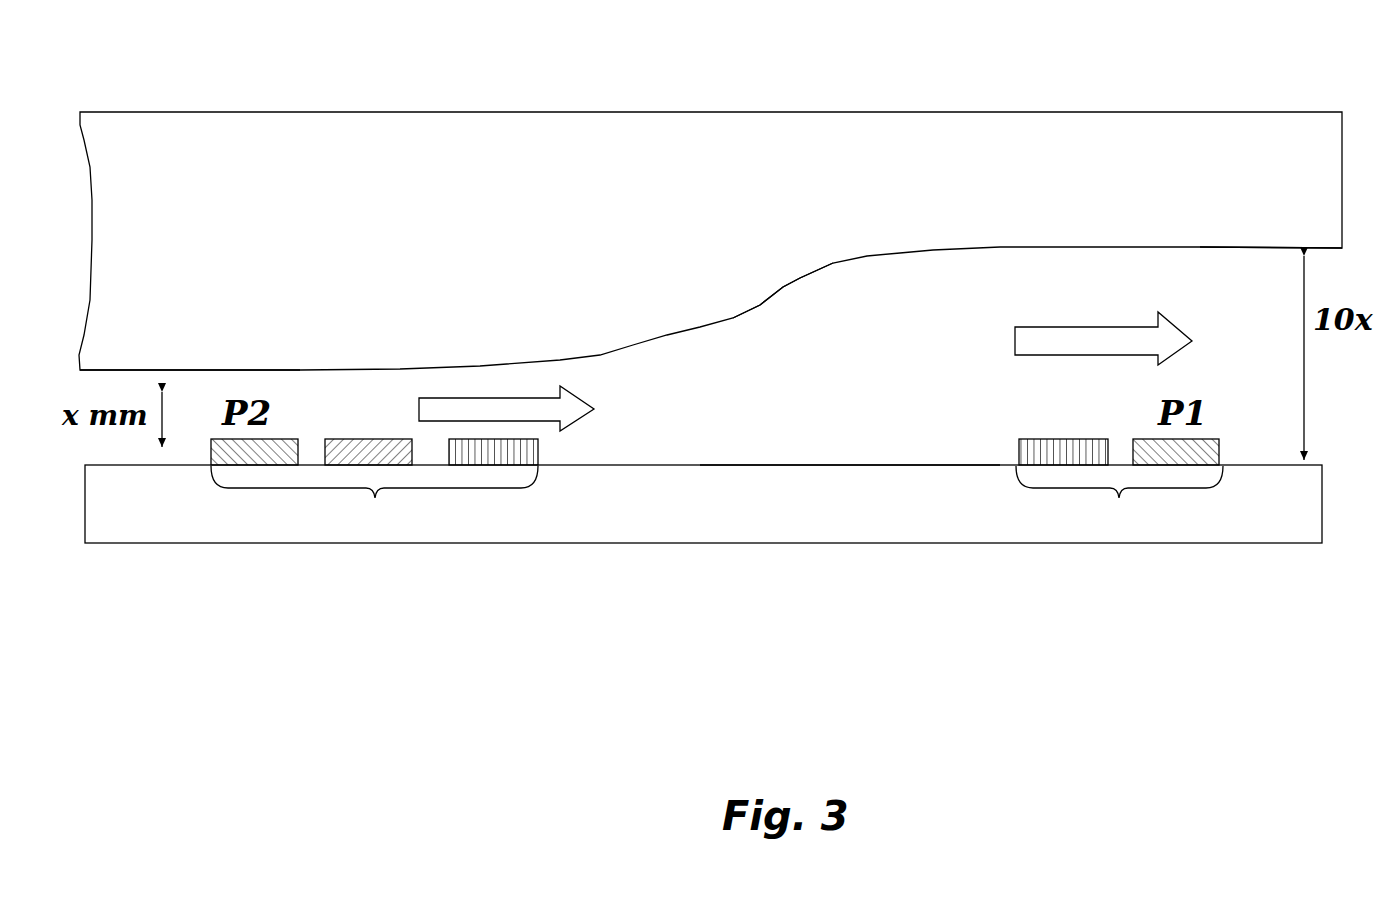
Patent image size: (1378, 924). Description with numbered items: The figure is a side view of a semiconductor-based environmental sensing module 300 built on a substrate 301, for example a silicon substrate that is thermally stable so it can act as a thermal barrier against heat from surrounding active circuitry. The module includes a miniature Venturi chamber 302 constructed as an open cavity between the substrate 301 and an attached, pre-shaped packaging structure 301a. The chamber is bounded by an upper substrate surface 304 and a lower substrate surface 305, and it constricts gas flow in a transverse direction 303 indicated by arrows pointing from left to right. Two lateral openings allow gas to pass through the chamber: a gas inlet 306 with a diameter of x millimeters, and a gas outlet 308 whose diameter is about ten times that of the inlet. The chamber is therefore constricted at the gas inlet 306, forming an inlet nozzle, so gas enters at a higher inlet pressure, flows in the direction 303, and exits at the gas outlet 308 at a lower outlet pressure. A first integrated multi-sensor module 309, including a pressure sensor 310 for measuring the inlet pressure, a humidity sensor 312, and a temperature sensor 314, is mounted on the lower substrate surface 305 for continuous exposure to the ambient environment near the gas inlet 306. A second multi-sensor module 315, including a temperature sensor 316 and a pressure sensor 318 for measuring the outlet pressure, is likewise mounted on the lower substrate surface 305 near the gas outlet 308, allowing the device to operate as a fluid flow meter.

The environmental sensing module 300 is at (1108, 30).
The substrate 301 is at (703, 504).
The packaging structure 301a is at (1271, 232).
The miniature Venturi chamber 302 is at (710, 241).
The transverse direction 303 is at (568, 406).
The upper substrate surface 304 is at (885, 255).
The lower substrate surface 305 is at (843, 463).
The gas inlet 306 is at (182, 408).
The gas outlet 308 is at (1329, 358).
The first integrated multi-sensor module 309 is at (374, 500).
The pressure sensor 310 is at (286, 437).
The humidity sensor 312 is at (352, 437).
The temperature sensor 314 is at (540, 451).
The second multi-sensor module 315 is at (1119, 501).
The temperature sensor 316 is at (1052, 437).
The pressure sensor 318 is at (1195, 437).